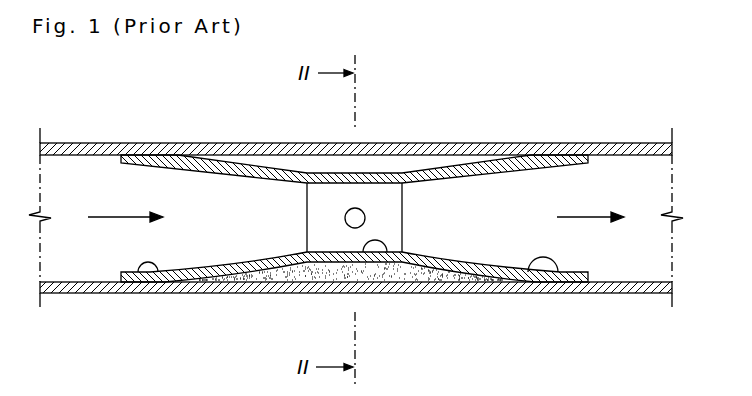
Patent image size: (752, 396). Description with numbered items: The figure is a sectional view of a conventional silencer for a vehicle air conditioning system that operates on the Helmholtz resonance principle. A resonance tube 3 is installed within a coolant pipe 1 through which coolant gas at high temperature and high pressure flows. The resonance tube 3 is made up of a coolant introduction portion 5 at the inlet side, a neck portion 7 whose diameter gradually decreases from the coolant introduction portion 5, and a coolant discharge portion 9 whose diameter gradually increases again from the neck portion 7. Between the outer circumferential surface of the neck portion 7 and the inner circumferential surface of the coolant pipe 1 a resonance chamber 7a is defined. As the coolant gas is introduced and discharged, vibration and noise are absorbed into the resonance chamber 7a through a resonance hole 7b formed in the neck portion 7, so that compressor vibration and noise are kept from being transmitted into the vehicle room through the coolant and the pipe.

The coolant pipe 1 is at (569, 143).
The resonance tube 3 is at (354, 183).
The coolant introduction portion 5 is at (143, 261).
The neck portion 7 is at (387, 243).
The resonance chamber 7a is at (376, 167).
The resonance hole 7b is at (345, 217).
The coolant discharge portion 9 is at (554, 258).